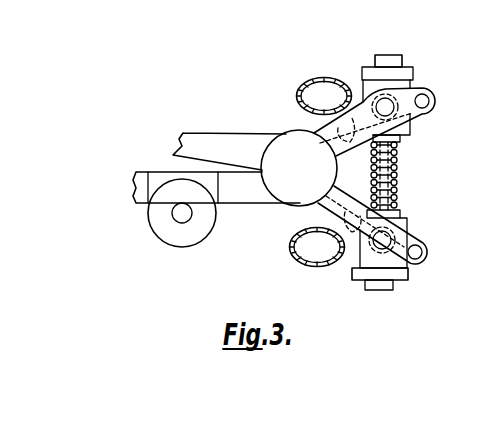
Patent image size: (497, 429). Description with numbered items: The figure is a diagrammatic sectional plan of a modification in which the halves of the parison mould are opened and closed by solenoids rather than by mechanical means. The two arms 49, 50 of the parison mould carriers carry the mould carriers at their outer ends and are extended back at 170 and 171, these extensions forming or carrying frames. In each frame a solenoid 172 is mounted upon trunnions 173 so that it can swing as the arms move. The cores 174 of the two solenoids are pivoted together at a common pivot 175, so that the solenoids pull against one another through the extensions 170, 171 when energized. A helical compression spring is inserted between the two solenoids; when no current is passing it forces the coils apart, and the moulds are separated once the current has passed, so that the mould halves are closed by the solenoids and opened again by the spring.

The arm 49 is at (227, 133).
The arm 50 is at (247, 204).
The arm extension 170 is at (362, 102).
The arm extension 171 is at (352, 258).
The solenoid 172 is at (403, 67).
The trunnion 173 is at (393, 104).
The solenoid core 174 is at (397, 160).
The pivot 175 is at (391, 174).